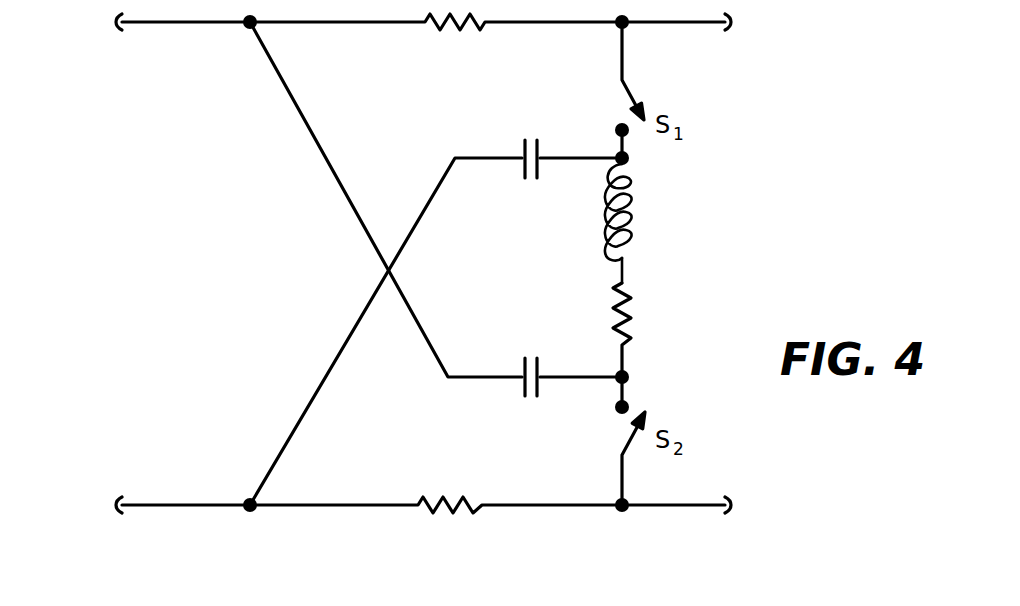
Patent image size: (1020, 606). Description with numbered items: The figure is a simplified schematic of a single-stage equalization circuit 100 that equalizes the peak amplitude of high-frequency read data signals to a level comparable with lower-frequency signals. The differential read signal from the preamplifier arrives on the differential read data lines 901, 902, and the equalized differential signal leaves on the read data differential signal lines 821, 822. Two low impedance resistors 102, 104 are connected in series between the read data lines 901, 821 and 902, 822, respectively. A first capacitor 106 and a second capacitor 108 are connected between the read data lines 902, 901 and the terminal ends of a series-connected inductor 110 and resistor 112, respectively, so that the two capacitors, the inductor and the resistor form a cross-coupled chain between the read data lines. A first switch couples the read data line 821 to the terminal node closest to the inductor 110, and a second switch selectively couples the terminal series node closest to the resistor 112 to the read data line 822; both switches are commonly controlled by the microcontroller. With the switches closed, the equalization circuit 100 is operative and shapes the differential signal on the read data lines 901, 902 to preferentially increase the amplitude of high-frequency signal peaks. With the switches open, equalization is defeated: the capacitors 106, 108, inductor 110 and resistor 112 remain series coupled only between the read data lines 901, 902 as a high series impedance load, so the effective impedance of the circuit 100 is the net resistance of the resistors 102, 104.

The equalization circuit 100 is at (782, 206).
The differential read data line 901 is at (145, 22).
The differential read data line 902 is at (168, 505).
The read data differential signal line 821 is at (692, 22).
The read data differential signal line 822 is at (688, 505).
The low impedance resistor 102 is at (463, 18).
The low impedance resistor 104 is at (455, 493).
The capacitor 106 is at (521, 152).
The capacitor 108 is at (521, 372).
The inductor 110 is at (633, 200).
The resistor 112 is at (628, 312).